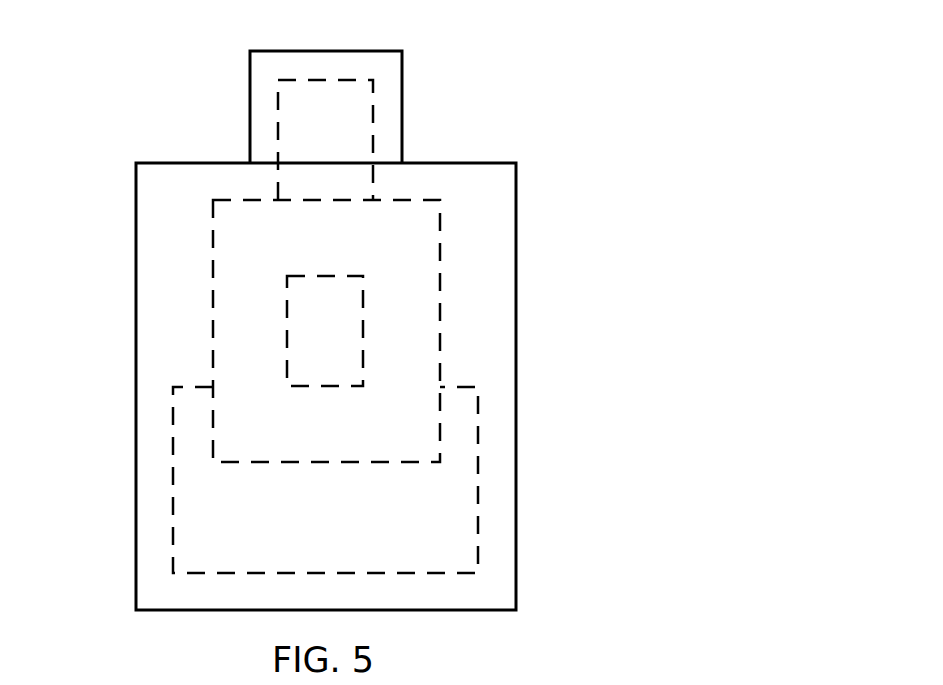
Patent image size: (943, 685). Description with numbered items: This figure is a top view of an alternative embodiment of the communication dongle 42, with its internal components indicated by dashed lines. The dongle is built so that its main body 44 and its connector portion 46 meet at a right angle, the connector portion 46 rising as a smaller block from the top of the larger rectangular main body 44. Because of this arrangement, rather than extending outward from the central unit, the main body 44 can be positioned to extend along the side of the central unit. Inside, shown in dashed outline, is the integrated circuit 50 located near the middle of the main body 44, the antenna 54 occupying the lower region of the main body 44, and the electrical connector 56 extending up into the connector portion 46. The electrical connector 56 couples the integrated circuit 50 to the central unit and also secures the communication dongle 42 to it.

The communication dongle 42 is at (98, 107).
The main body 44 is at (135, 290).
The connector portion 46 is at (250, 98).
The integrated circuit 50 is at (343, 296).
The antenna 54 is at (478, 438).
The electrical connector 56 is at (373, 125).